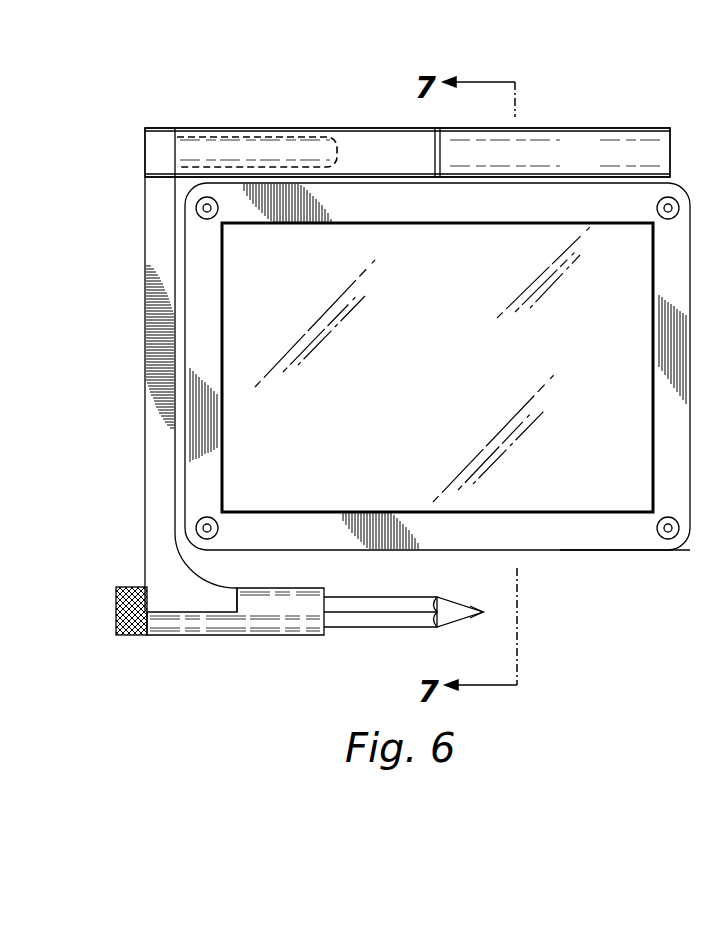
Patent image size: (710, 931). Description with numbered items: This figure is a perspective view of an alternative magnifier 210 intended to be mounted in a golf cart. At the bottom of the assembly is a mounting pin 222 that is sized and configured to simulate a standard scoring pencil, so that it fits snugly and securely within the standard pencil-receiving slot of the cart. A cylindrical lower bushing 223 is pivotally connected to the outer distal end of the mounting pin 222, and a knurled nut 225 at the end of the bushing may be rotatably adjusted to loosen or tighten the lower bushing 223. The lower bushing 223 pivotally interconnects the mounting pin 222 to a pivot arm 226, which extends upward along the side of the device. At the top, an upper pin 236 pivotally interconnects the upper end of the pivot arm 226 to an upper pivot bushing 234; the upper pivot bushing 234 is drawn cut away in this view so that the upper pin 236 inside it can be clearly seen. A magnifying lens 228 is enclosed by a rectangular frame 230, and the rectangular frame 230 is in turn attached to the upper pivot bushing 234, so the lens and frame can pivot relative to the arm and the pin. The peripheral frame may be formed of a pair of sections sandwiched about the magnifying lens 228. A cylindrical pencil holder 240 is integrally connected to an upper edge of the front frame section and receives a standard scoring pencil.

The magnifier 210 is at (376, 92).
The mounting pin 222 is at (383, 627).
The cylindrical lower bushing 223 is at (183, 637).
The knurled nut 225 is at (116, 610).
The pivot arm 226 is at (145, 440).
The magnifying lens 228 is at (478, 262).
The rectangular frame 230 is at (603, 551).
The upper pivot bushing 234 is at (247, 127).
The upper pin 236 is at (210, 152).
The cylindrical pencil holder 240 is at (583, 128).